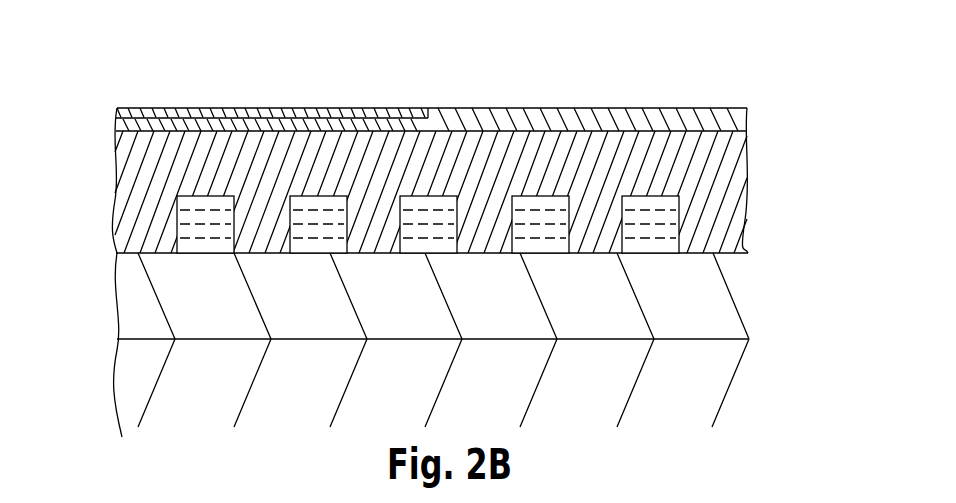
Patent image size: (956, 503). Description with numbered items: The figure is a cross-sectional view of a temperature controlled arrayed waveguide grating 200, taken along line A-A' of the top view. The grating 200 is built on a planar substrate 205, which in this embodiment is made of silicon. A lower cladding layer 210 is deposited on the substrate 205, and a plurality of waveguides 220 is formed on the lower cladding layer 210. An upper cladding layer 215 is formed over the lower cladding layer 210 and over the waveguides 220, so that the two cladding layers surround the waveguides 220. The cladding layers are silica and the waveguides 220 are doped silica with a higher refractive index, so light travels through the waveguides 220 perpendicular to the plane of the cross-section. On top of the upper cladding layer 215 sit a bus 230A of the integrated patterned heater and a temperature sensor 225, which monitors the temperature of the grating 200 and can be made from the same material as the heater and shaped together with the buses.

The temperature controlled arrayed waveguide grating 200 is at (612, 57).
The planar substrate 205 is at (759, 364).
The lower cladding layer 210 is at (756, 284).
The upper cladding layer 215 is at (103, 150).
The waveguides 220 is at (296, 187).
The temperature sensor 225 is at (103, 121).
The bus 230A is at (651, 92).